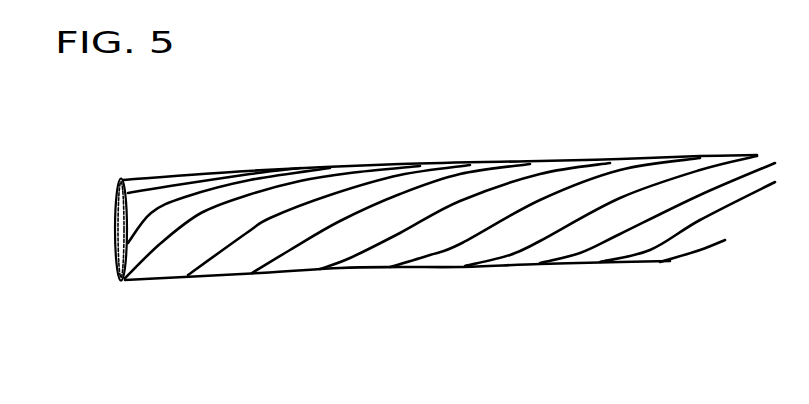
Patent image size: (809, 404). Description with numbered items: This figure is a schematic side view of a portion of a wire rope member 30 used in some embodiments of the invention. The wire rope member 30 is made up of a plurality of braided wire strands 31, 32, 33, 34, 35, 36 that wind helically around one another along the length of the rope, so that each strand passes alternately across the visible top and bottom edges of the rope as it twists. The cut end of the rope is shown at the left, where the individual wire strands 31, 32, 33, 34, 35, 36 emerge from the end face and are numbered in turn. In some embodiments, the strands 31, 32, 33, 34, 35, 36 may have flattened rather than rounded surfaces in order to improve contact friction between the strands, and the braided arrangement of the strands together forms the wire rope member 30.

The wire rope member 30 is at (464, 124).
The wire strand 31 is at (127, 176).
The wire strand 32 is at (142, 205).
The wire strand 33 is at (135, 245).
The wire strand 34 is at (175, 243).
The wire strand 35 is at (242, 253).
The wire strand 36 is at (308, 257).